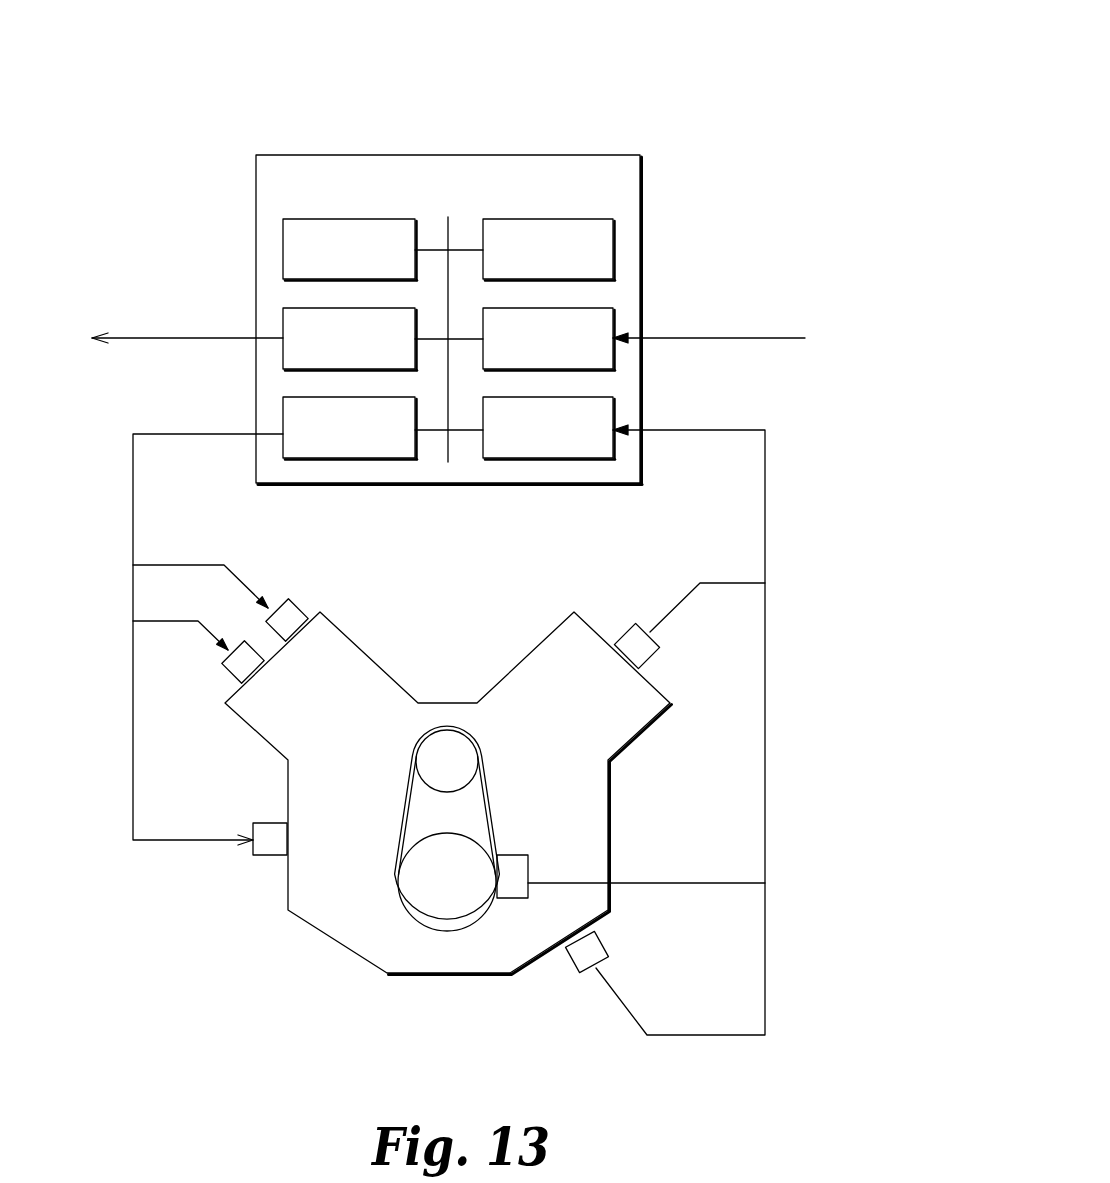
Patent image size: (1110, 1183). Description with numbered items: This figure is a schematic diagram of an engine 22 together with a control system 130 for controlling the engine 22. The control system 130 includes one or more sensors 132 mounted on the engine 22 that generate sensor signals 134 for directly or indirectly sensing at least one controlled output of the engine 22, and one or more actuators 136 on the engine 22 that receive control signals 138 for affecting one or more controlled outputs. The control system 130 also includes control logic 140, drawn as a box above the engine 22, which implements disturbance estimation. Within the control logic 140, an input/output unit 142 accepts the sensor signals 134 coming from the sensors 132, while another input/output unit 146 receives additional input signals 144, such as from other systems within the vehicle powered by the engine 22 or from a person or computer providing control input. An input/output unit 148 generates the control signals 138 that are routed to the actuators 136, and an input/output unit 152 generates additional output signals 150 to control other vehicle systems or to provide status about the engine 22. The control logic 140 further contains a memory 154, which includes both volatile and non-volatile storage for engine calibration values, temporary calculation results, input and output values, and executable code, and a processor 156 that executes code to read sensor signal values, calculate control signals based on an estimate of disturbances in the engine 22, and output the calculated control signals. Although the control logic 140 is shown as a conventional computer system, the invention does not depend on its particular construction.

The control system 130 is at (675, 78).
The control logic 140 is at (343, 155).
The processor 156 is at (283, 238).
The memory 154 is at (613, 238).
The input/output unit 152 is at (283, 323).
The input/output unit 146 is at (613, 323).
The input/output unit 148 is at (283, 413).
The input/output unit 142 is at (613, 405).
The additional output signals 150 is at (160, 338).
The additional input signals 144 is at (760, 338).
The control signals 138 is at (133, 523).
The sensor signals 134 is at (765, 513).
The actuators 136 is at (300, 608).
The sensors 132 is at (628, 627).
The engine 22 is at (267, 1008).